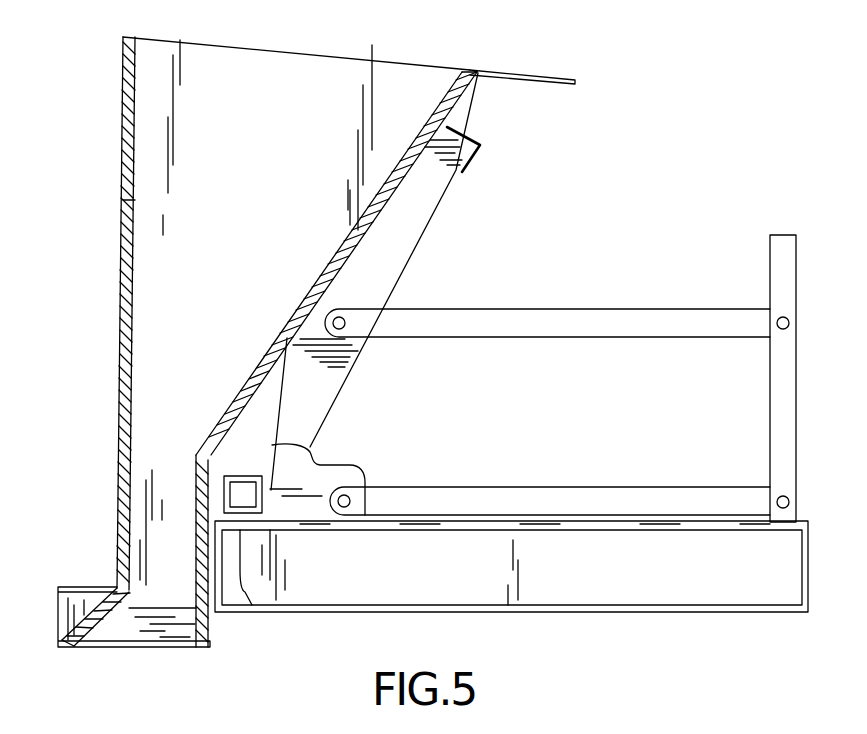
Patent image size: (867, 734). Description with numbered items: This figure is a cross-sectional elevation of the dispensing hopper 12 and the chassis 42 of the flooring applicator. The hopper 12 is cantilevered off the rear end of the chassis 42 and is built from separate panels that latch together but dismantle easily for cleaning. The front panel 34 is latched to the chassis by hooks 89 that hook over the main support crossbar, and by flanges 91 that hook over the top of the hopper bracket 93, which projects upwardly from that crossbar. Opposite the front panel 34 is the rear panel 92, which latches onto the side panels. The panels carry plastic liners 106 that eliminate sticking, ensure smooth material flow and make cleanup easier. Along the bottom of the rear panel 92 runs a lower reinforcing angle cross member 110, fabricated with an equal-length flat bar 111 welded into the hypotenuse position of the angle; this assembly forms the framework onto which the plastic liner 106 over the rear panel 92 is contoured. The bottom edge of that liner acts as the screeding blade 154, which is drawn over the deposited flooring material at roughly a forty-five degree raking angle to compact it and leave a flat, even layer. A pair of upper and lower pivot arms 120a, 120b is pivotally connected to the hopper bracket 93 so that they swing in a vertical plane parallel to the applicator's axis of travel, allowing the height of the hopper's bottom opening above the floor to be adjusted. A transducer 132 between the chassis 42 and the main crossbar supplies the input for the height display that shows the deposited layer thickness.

The dispensing hopper 12 is at (272, 118).
The rear panel 92 is at (119, 288).
The plastic liner 106 is at (135, 200).
The lower reinforcing angle cross member 110 is at (75, 589).
The flat bar 111 is at (102, 583).
The screeding blade 154 is at (91, 646).
The flange 91 is at (458, 174).
The hopper bracket 93 is at (372, 302).
The front panel 34 is at (350, 350).
The upper pivot arm 120a is at (542, 310).
The lower pivot arm 120b is at (462, 487).
The hook 89 is at (310, 447).
The chassis 42 is at (455, 597).
The transducer 132 is at (252, 605).